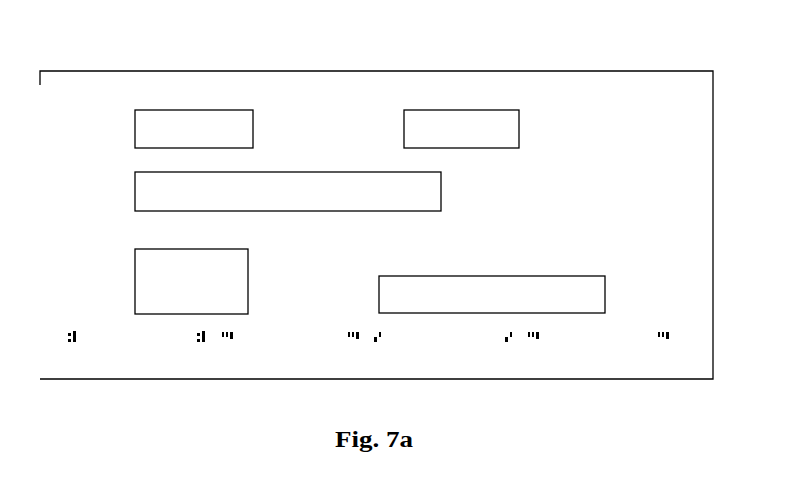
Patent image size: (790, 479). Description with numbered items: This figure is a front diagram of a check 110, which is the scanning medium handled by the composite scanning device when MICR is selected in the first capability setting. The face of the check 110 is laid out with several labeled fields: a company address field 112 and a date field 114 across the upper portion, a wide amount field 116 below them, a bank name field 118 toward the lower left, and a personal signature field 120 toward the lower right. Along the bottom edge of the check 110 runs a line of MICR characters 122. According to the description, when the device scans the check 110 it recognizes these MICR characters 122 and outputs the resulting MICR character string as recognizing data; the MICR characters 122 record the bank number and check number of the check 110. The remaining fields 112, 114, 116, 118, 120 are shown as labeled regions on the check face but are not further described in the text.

The check 110 is at (411, 71).
The company address field 112 is at (253, 127).
The date field 114 is at (519, 124).
The amount field 116 is at (441, 184).
The bank name field 118 is at (248, 257).
The personal signature field 120 is at (605, 291).
The MICR characters 122 is at (83, 326).